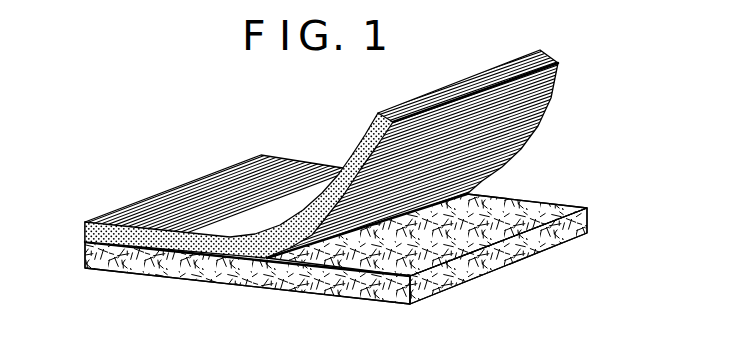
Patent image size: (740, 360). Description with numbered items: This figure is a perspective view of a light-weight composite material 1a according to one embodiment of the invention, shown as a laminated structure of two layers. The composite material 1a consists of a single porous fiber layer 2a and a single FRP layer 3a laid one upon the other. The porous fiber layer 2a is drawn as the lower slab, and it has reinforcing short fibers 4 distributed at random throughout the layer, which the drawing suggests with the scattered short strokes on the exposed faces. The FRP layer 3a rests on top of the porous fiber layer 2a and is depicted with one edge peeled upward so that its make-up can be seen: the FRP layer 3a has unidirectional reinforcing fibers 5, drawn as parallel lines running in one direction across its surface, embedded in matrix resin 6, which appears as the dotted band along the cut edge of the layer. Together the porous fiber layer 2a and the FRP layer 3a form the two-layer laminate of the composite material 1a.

The composite material 1a is at (329, 182).
The porous fiber layer 2a is at (336, 258).
The FRP layer 3a is at (322, 157).
The reinforcing short fibers 4 is at (267, 281).
The unidirectional reinforcing fibers 5 is at (200, 190).
The matrix resin 6 is at (85, 234).